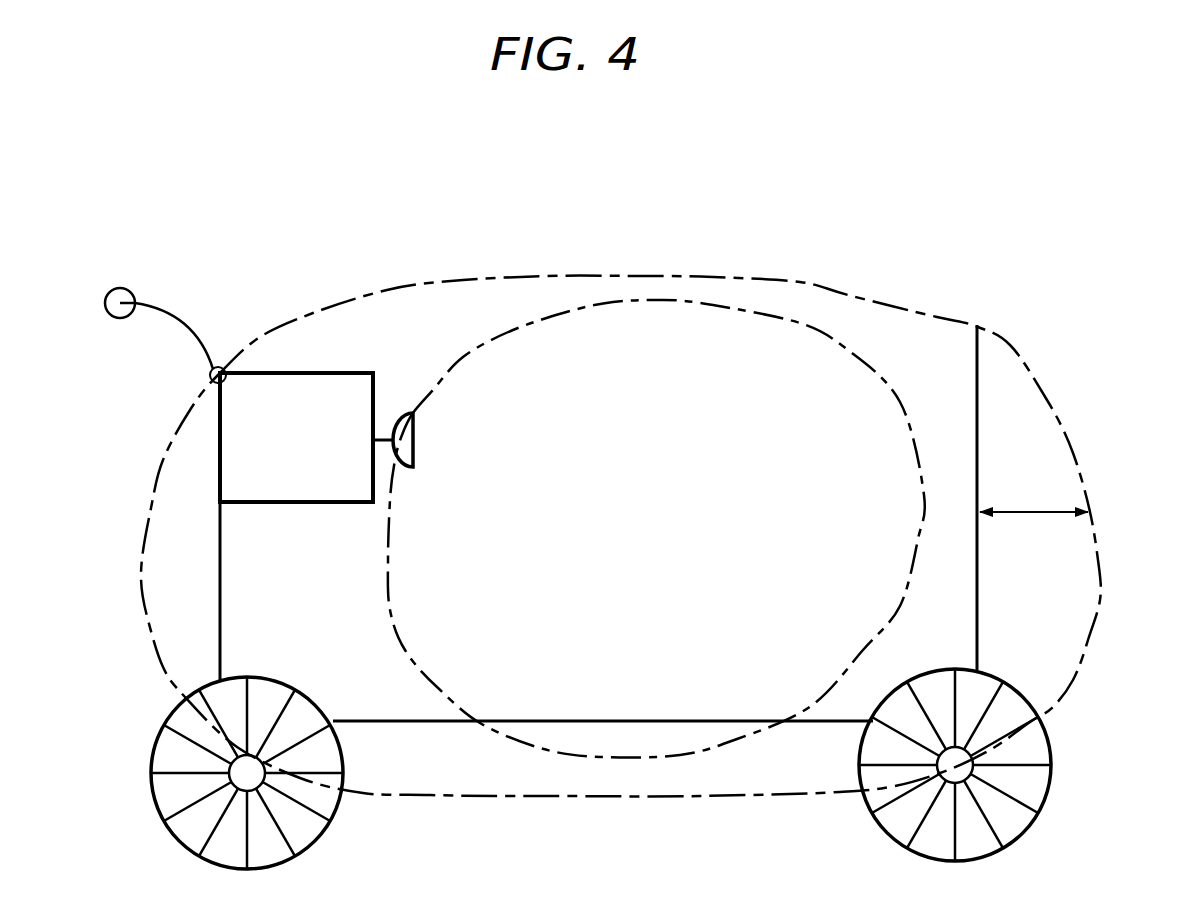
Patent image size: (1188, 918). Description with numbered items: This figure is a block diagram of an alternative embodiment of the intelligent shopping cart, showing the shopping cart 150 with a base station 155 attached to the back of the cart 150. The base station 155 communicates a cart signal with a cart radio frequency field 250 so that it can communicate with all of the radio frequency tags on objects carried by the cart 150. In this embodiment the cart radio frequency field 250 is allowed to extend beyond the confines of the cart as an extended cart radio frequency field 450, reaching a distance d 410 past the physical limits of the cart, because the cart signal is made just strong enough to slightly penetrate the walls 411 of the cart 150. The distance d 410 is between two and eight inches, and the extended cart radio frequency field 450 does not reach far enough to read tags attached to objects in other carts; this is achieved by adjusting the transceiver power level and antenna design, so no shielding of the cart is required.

The shopping cart 150 is at (220, 609).
The base station 155 is at (283, 373).
The cart radio frequency field 250 is at (683, 318).
The extended cart radio frequency field 450 is at (897, 312).
The walls 411 is at (978, 393).
The distance d 410 is at (1052, 488).